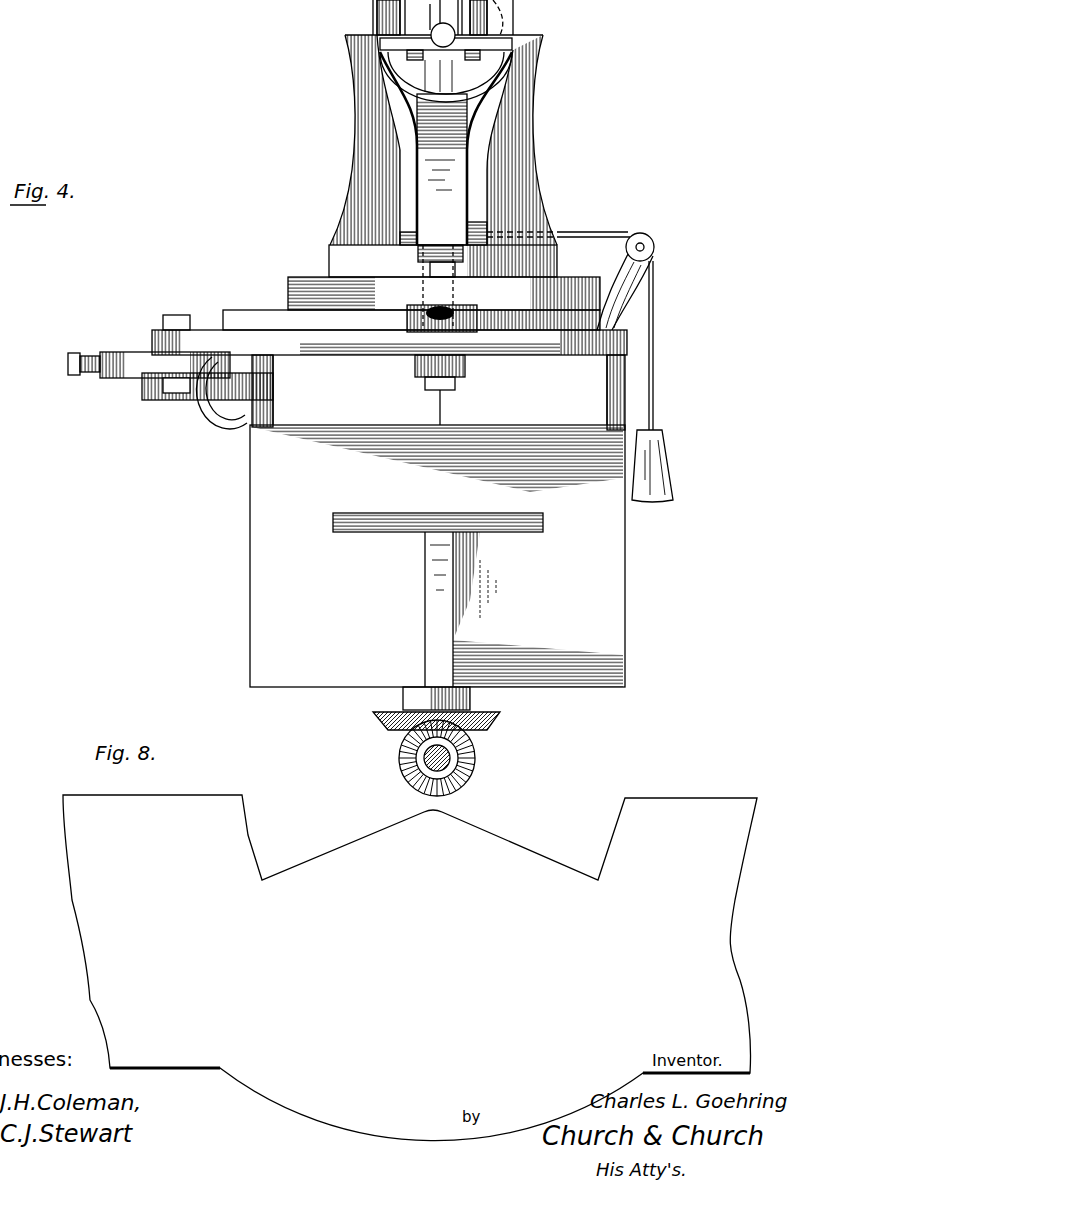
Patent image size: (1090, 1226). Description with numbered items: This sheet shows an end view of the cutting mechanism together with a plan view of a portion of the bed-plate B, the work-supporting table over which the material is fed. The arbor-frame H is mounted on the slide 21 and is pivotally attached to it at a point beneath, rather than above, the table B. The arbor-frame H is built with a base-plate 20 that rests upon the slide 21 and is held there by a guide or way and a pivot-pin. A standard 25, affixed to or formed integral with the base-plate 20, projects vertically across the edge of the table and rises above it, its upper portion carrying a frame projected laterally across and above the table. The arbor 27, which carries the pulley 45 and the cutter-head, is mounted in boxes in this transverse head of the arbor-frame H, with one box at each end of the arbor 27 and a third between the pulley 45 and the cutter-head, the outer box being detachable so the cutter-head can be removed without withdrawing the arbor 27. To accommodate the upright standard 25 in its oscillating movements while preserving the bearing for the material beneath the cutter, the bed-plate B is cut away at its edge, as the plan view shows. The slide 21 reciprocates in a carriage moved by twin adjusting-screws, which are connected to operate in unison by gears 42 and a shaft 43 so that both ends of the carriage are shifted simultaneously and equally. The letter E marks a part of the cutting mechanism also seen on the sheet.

In FIG. 4, the base-plate 20 is at (443, 249).
In FIG. 4, the slide 21 is at (444, 287).
In FIG. 4, the standard 25 is at (440, 148).
In FIG. 4, the arbor 27 is at (443, 35).
In FIG. 4, the gears 42 is at (437, 754).
In FIG. 4, the shaft 43 is at (424, 758).
In FIG. 4, the pulley 45 is at (482, 88).
In FIG. 4, the standard E is at (355, 140).
In FIG. 4, the arbor-frame H is at (522, 140).
In FIG. 8, the bed-plate B is at (410, 968).